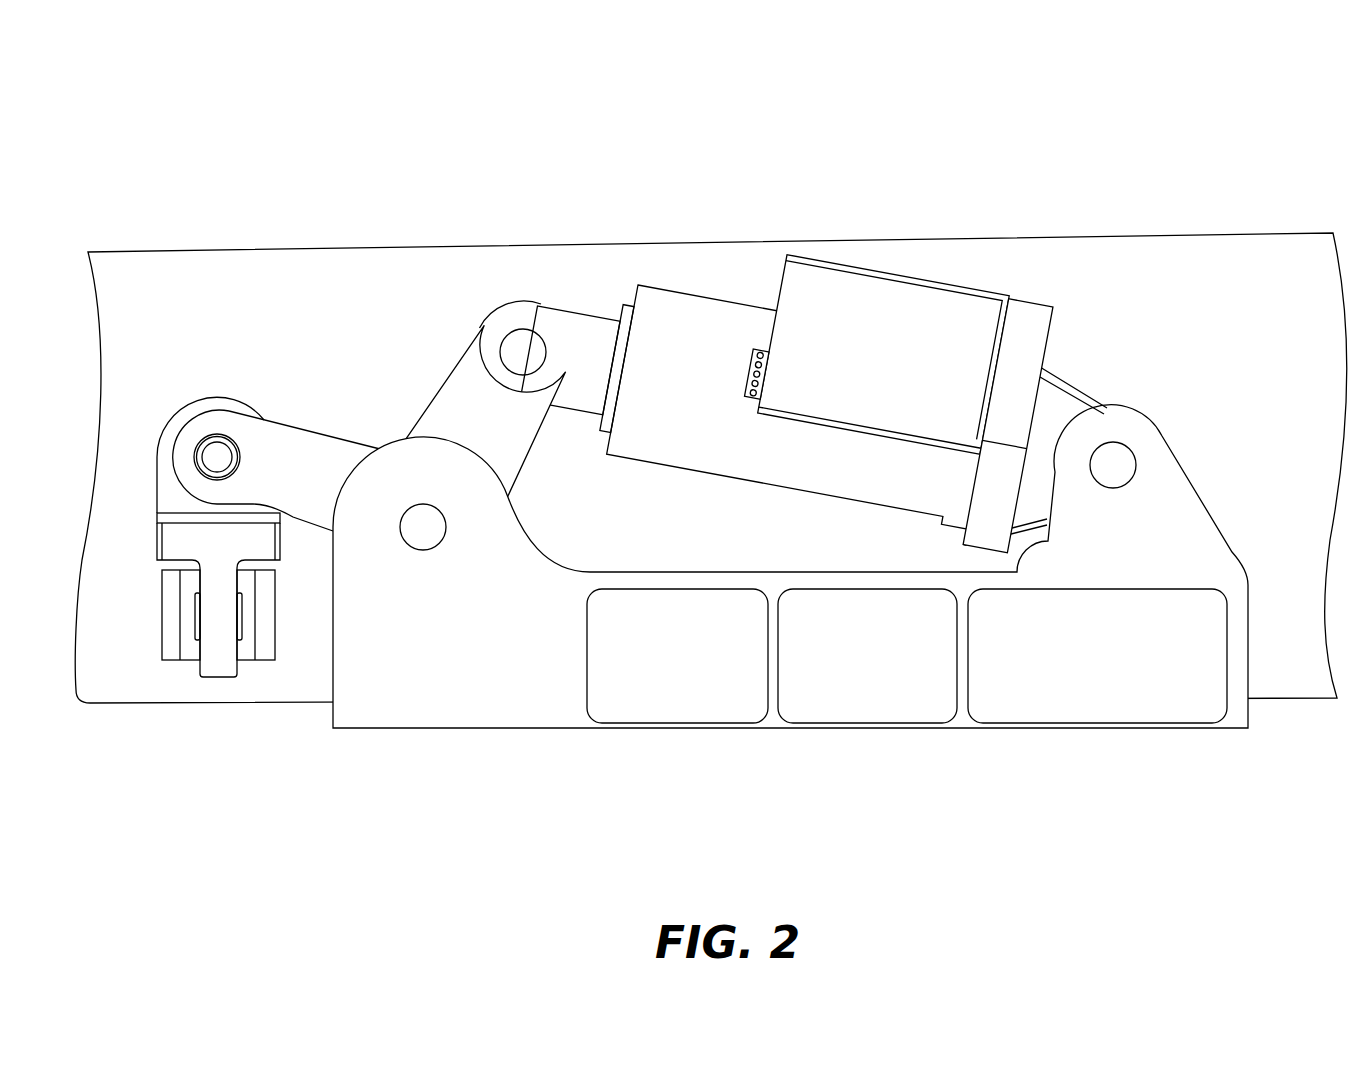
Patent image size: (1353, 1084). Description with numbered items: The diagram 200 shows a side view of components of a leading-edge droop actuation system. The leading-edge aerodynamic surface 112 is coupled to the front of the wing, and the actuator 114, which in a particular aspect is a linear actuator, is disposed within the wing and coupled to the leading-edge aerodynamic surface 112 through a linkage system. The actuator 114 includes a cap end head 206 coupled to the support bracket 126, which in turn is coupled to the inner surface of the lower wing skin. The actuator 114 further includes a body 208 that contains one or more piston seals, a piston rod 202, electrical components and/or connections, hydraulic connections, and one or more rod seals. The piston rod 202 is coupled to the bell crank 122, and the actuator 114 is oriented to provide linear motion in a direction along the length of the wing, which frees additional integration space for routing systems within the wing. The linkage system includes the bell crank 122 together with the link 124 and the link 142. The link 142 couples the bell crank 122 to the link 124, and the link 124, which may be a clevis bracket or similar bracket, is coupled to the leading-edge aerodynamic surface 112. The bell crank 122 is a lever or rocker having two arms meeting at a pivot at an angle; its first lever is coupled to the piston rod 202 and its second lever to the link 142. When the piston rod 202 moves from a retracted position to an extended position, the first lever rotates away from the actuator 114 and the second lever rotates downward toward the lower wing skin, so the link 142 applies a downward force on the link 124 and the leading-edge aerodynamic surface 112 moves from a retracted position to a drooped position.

The diagram 200 is at (156, 66).
The leading-edge aerodynamic surface 112 is at (1110, 234).
The actuator 114 is at (750, 460).
The bell crank 122 is at (455, 367).
The link 124 is at (170, 662).
The support bracket 126 is at (413, 731).
The link 142 is at (157, 447).
The piston rod 202 is at (590, 338).
The cap end head 206 is at (1060, 397).
The body 208 is at (655, 462).